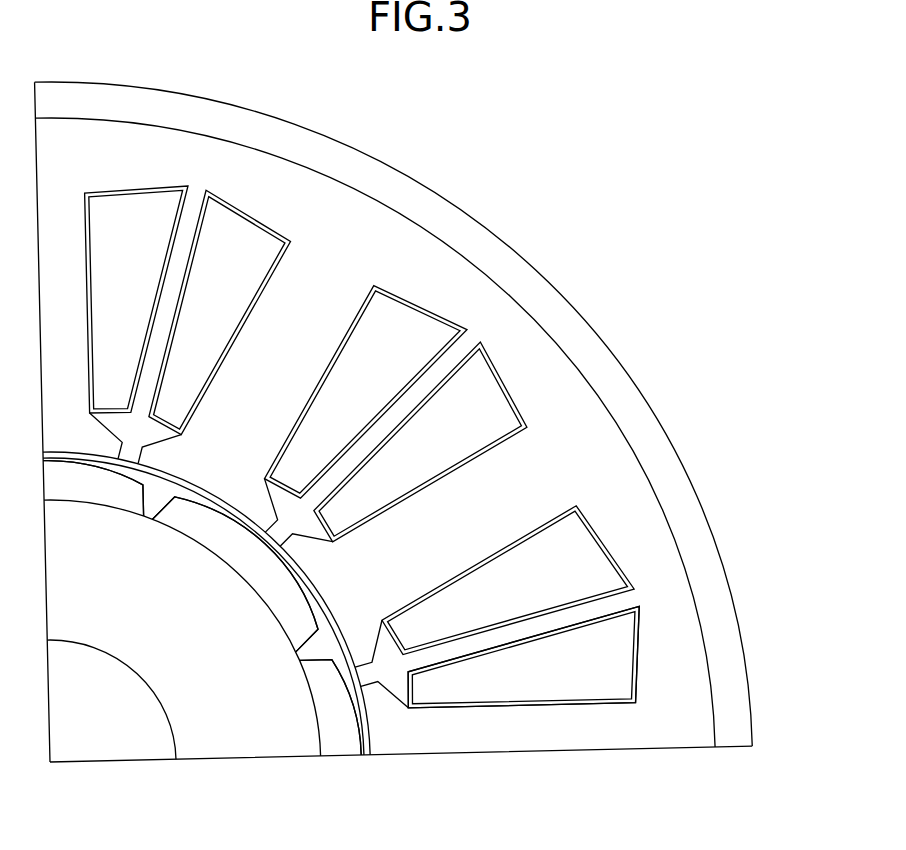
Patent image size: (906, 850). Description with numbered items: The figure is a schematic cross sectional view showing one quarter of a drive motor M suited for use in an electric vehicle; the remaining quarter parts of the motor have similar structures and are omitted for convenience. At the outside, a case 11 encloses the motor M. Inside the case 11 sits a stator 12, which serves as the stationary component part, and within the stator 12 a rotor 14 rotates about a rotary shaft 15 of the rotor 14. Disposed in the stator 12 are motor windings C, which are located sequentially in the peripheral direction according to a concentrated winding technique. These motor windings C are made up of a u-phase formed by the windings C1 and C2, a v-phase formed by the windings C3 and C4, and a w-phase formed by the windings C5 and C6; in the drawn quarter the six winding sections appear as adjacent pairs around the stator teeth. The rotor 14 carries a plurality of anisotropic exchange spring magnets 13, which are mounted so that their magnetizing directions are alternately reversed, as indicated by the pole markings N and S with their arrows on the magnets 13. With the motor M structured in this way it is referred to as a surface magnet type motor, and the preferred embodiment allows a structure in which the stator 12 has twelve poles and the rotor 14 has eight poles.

The drive motor M is at (586, 258).
The case 11 is at (725, 623).
The stator 12 is at (642, 740).
The anisotropic exchange spring magnet 13 is at (350, 752).
The rotor 14 is at (233, 753).
The rotary shaft 15 is at (112, 753).
The motor windings C is at (573, 687).
The u-phase winding C1 is at (139, 299).
The u-phase winding C2 is at (523, 657).
The v-phase winding C3 is at (507, 580).
The v-phase winding C4 is at (419, 441).
The w-phase winding C5 is at (365, 391).
The w-phase winding C6 is at (219, 311).
The north pole magnet N is at (55, 467).
The south pole magnet S is at (260, 551).